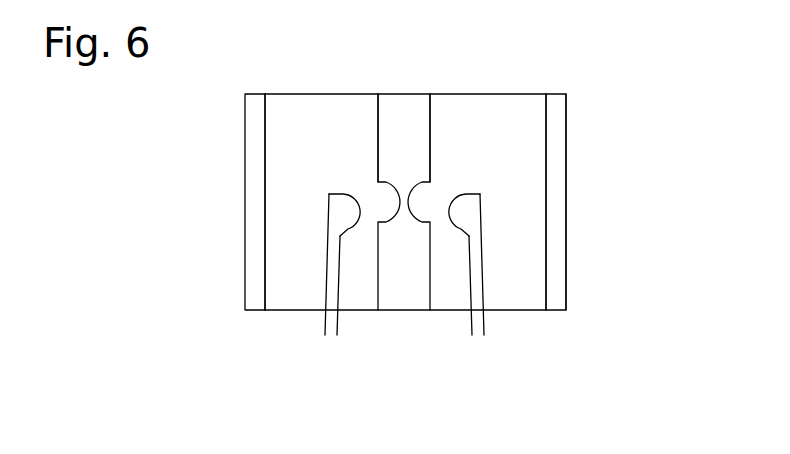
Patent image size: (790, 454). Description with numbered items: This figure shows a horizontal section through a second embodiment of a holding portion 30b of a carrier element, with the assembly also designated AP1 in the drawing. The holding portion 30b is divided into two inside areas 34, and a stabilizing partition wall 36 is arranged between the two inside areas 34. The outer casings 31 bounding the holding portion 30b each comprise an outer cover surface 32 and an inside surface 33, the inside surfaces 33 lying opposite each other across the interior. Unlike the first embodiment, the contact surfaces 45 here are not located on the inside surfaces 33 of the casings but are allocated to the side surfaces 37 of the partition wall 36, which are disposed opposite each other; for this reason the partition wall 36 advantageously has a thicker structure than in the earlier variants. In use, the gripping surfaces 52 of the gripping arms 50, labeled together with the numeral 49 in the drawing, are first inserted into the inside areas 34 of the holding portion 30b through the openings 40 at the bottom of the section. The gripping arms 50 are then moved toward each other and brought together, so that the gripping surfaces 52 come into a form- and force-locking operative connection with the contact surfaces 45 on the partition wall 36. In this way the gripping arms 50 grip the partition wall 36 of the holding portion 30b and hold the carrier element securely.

The holding portion 30b is at (629, 314).
The application part AP1 is at (424, 201).
The outer casing 31 is at (557, 114).
The outer cover surface 32 is at (566, 153).
The inside surface 33 is at (548, 147).
The inside area 34 is at (331, 148).
The partition wall 36 is at (397, 140).
The side surface 37 is at (372, 142).
The opening 40 is at (335, 298).
The contact surface 45 is at (410, 200).
The contact element 49 is at (251, 264).
The gripping arm 50 is at (335, 290).
The gripping surface 52 is at (356, 221).